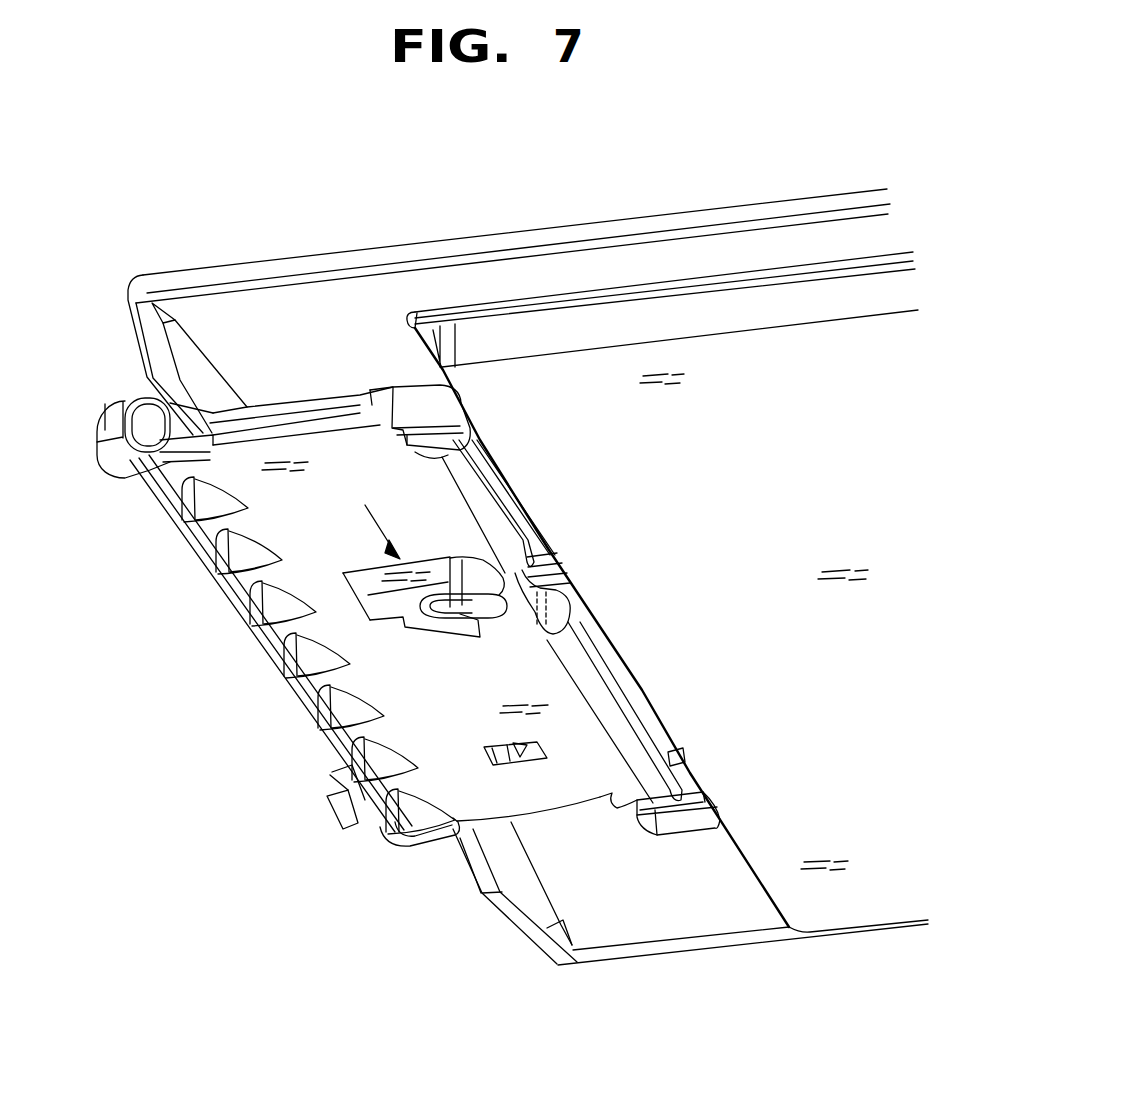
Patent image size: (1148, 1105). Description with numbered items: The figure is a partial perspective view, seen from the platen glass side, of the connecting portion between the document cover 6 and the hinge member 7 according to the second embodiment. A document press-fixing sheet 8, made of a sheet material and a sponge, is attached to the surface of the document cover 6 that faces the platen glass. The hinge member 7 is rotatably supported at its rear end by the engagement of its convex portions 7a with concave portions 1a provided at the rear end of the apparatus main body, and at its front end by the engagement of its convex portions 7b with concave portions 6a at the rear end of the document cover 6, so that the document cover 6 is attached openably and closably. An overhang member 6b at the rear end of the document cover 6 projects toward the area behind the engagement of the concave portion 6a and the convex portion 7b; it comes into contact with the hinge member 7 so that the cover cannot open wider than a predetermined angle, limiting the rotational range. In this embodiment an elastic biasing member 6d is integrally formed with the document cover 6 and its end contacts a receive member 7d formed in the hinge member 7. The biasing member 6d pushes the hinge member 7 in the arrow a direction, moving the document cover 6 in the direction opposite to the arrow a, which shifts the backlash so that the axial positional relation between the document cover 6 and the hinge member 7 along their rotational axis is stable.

The document cover 6 is at (522, 275).
The document press-fixing sheet 8 is at (650, 322).
The overhang member 6b is at (245, 367).
The concave portion 6a is at (598, 610).
The convex portion 7b is at (443, 417).
The concave portion 1a is at (129, 410).
The convex portion 7a is at (143, 427).
The hinge member 7 is at (202, 548).
The receive member 7d is at (442, 633).
The biasing member 6d is at (557, 603).
The arrow a direction a is at (377, 532).